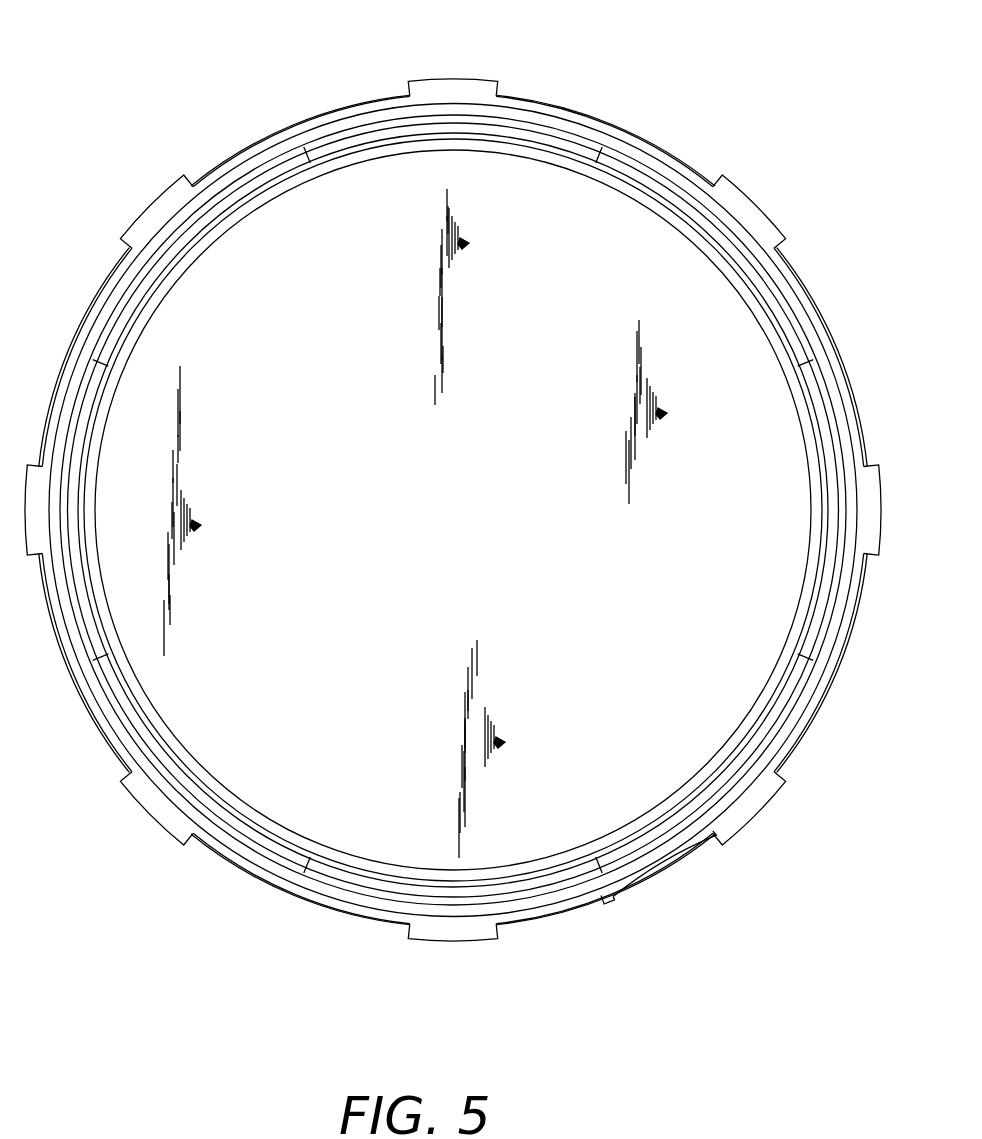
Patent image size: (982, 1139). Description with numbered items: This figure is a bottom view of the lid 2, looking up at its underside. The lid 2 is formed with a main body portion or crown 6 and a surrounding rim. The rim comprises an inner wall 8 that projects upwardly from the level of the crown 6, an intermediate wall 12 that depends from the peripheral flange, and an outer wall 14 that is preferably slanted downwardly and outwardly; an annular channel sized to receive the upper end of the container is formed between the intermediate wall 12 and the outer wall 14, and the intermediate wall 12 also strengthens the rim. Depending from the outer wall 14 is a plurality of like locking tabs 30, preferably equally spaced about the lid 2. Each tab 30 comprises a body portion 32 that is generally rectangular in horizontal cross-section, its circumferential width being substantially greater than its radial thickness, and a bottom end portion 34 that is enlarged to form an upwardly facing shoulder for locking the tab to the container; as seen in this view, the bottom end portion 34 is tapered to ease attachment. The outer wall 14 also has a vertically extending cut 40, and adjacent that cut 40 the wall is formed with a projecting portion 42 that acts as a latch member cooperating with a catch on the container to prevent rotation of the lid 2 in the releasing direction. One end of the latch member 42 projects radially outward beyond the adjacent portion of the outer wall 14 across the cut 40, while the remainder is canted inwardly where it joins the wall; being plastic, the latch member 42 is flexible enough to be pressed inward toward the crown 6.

The lid 2 is at (562, 73).
The crown 6 is at (459, 550).
The inner wall 8 is at (826, 560).
The intermediate wall 12 is at (840, 470).
The outer wall 14 is at (845, 403).
The locking tabs 30 is at (183, 176).
The body portion 32 is at (165, 207).
The bottom end portion 34 is at (132, 220).
The cut 40 is at (609, 902).
The projecting portion 42 is at (648, 887).